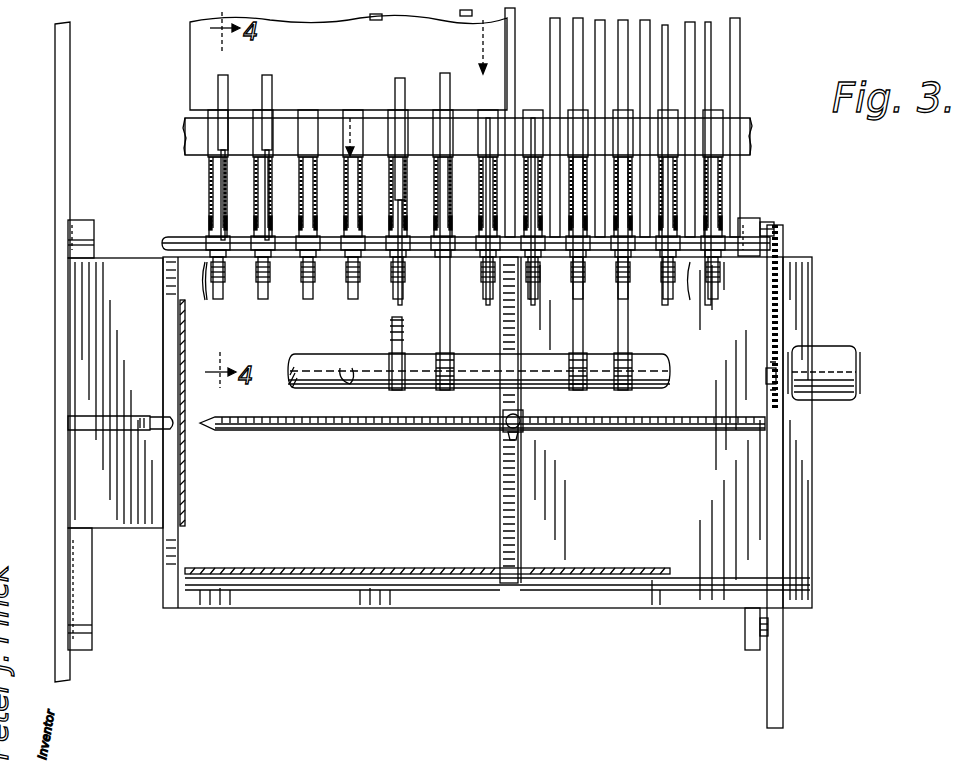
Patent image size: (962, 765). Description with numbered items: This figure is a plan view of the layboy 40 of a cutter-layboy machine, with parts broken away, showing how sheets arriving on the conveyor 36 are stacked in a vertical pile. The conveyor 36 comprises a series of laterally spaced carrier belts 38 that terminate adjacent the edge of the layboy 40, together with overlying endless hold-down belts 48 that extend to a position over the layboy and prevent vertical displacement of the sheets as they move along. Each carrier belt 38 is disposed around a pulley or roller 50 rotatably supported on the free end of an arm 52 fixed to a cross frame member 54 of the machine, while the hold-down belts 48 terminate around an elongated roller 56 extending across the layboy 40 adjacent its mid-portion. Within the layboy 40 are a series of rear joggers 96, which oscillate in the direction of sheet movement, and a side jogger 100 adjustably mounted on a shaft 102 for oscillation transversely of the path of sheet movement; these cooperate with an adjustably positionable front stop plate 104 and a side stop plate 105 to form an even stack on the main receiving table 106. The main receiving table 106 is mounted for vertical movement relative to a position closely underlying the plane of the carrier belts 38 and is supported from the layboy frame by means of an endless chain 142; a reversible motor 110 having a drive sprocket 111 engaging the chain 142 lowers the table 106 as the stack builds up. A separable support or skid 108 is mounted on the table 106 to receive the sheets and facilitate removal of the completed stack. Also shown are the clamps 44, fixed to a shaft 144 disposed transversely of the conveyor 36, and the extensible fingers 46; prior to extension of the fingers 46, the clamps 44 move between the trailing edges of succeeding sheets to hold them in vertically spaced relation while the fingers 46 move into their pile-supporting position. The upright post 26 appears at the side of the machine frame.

The upright post 26 is at (55, 195).
The conveyor 36 is at (742, 52).
The carrier belts 38 is at (183, 128).
The layboy 40 is at (487, 432).
The clamps 44 is at (360, 282).
The extensible fingers 46 is at (345, 92).
The hold-down belts 48 is at (400, 78).
The pulley or roller 50 is at (180, 205).
The arm 52 is at (745, 178).
The cross frame member 54 is at (300, 118).
The elongated roller 56 is at (655, 385).
The rear joggers 96 is at (447, 297).
The side jogger 100 is at (525, 415).
The shaft 102 is at (68, 418).
The front stop plate 104 is at (600, 568).
The side stop plate 105 is at (170, 468).
The main receiving table 106 is at (284, 612).
The skid 108 is at (487, 592).
The reversible motor 110 is at (838, 402).
The drive sprocket 111 is at (768, 384).
The endless chain 142 is at (782, 294).
The shaft 144 is at (175, 236).